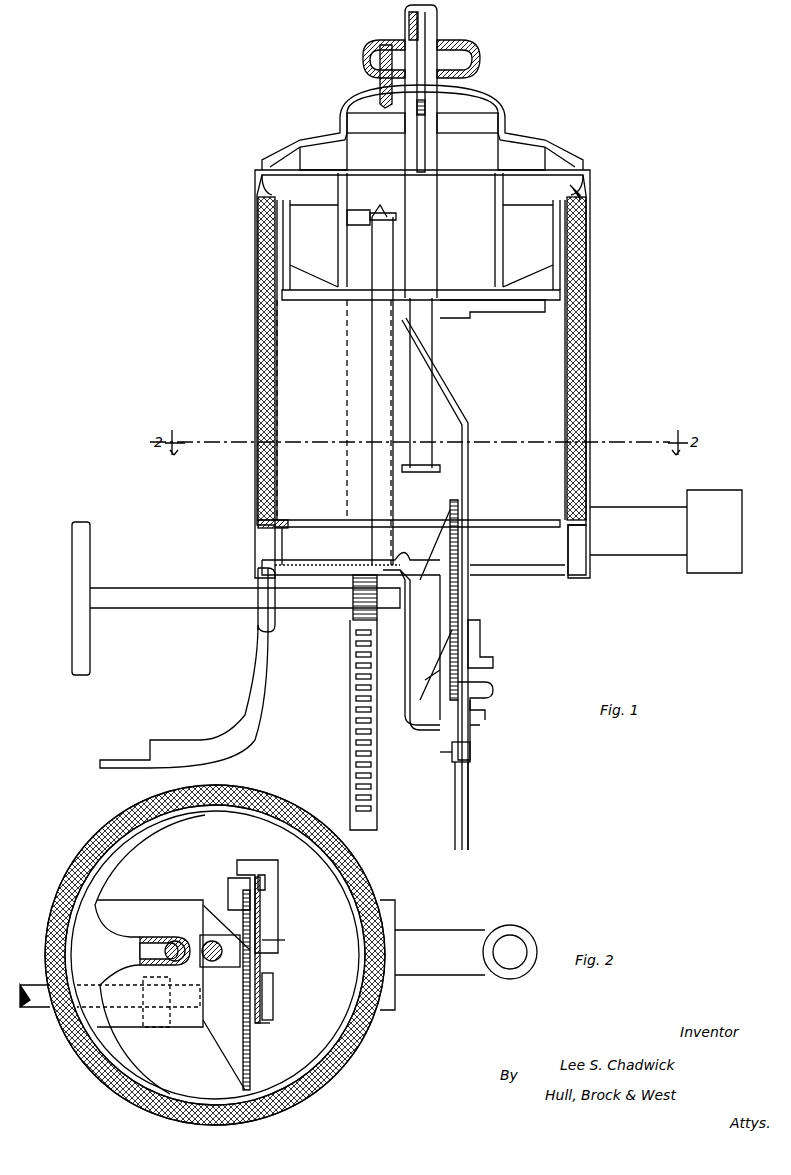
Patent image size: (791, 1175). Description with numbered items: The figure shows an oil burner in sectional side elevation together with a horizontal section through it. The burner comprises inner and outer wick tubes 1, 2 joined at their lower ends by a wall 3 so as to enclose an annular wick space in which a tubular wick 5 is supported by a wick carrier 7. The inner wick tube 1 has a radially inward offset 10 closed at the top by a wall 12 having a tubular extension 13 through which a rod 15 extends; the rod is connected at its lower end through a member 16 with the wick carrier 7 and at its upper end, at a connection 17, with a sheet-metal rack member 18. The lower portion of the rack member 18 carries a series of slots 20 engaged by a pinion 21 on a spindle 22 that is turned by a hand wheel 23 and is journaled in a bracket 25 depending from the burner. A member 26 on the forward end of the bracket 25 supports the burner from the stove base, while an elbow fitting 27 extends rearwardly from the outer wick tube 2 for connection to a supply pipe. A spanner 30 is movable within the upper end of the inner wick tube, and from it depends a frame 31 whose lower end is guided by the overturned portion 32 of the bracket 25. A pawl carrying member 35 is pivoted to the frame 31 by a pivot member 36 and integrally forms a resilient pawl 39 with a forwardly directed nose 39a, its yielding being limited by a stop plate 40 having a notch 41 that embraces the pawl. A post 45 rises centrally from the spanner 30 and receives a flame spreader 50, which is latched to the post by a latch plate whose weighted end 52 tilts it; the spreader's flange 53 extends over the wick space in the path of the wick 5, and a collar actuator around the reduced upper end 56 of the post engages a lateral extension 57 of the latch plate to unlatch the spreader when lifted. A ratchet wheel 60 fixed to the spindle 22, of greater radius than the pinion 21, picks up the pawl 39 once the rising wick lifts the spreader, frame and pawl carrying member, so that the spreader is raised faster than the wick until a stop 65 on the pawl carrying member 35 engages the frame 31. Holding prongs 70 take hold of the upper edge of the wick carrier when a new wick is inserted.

In FIG. 1, the inner wick tube 1 is at (527, 580).
In FIG. 2, the inner wick tube 1 is at (358, 957).
In FIG. 1, the outer wick tube 2 is at (590, 375).
In FIG. 2, the outer wick tube 2 is at (370, 880).
In FIG. 1, the wall 3 is at (565, 575).
In FIG. 2, the wall 3 is at (282, 947).
In FIG. 1, the tubular wick 5 is at (588, 250).
In FIG. 1, the wick carrier 7 is at (590, 412).
In FIG. 1, the offset 10 is at (312, 410).
In FIG. 2, the offset 10 is at (130, 935).
In FIG. 1, the wall 12 is at (330, 305).
In FIG. 1, the tubular extension 13 is at (395, 248).
In FIG. 1, the rod 15 is at (370, 368).
In FIG. 2, the rod 15 is at (165, 951).
In FIG. 1, the member 16 is at (318, 512).
In FIG. 2, the member 16 is at (94, 945).
In FIG. 1, the connection 17 is at (384, 207).
In FIG. 1, the rack member 18 is at (358, 220).
In FIG. 2, the rack member 18 is at (163, 937).
In FIG. 1, the slots 20 is at (355, 663).
In FIG. 1, the pinion 21 is at (353, 612).
In FIG. 2, the pinion 21 is at (160, 1020).
In FIG. 1, the spindle 22 is at (305, 607).
In FIG. 2, the spindle 22 is at (45, 1010).
In FIG. 1, the hand wheel 23 is at (90, 555).
In FIG. 1, the bracket 25 is at (415, 640).
In FIG. 2, the bracket 25 is at (190, 920).
In FIG. 1, the member 26 is at (250, 679).
In FIG. 1, the elbow fitting 27 is at (666, 531).
In FIG. 2, the elbow fitting 27 is at (466, 952).
In FIG. 1, the spanner 30 is at (540, 312).
In FIG. 1, the frame 31 is at (468, 483).
In FIG. 1, the overturned portion 32 is at (470, 752).
In FIG. 1, the pawl carrying member 35 is at (475, 730).
In FIG. 2, the pawl carrying member 35 is at (265, 1023).
In FIG. 1, the pivot member 36 is at (480, 640).
In FIG. 2, the pivot member 36 is at (273, 995).
In FIG. 1, the pawl 39 is at (430, 752).
In FIG. 2, the pawl 39 is at (222, 880).
In FIG. 2, the nose 39a is at (215, 941).
In FIG. 2, the stop plate 40 is at (255, 868).
In FIG. 2, the notch 41 is at (263, 875).
In FIG. 1, the post 45 is at (437, 210).
In FIG. 1, the flame spreader 50 is at (510, 145).
In FIG. 1, the weighted end 52 is at (425, 150).
In FIG. 1, the flange 53 is at (585, 185).
In FIG. 1, the reduced upper end 56 is at (437, 22).
In FIG. 1, the lateral extension 57 is at (409, 22).
In FIG. 1, the ratchet wheel 60 is at (458, 540).
In FIG. 2, the ratchet wheel 60 is at (260, 920).
In FIG. 1, the stop 65 is at (493, 690).
In FIG. 2, the holding prongs 70 is at (215, 787).